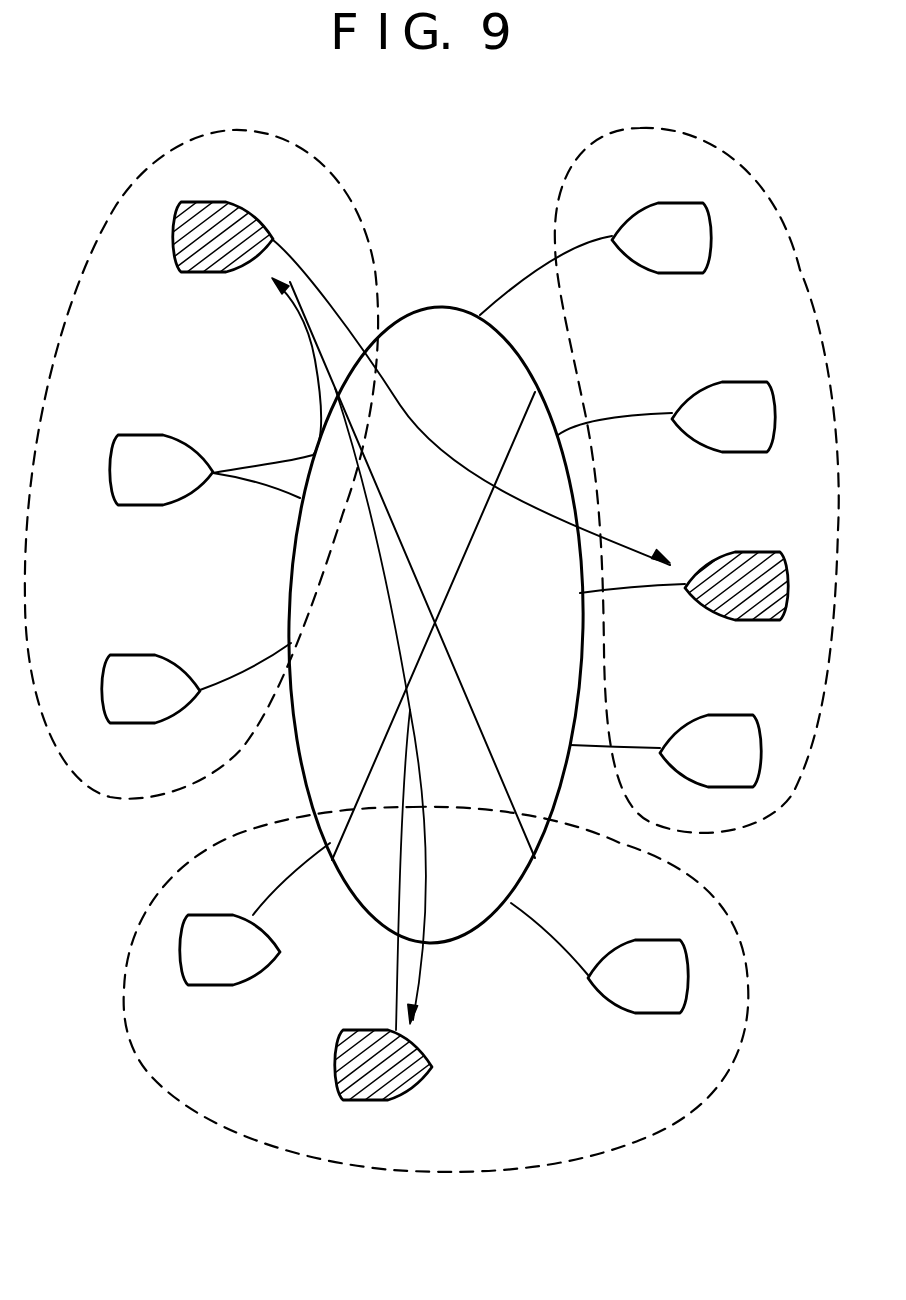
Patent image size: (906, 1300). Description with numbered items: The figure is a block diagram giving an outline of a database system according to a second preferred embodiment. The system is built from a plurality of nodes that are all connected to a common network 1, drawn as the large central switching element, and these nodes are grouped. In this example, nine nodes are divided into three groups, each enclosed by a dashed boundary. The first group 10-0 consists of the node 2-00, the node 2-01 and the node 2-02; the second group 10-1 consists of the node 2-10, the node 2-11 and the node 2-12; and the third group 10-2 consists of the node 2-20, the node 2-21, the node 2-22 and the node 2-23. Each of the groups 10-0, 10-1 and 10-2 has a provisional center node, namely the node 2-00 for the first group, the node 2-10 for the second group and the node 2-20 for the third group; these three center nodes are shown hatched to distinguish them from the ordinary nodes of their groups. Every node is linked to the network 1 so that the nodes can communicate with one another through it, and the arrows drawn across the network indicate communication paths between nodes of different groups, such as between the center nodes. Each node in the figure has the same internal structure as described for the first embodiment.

The network 1 is at (444, 307).
The group 10-0 is at (147, 157).
The group 10-1 is at (130, 922).
The group 10-2 is at (772, 819).
The node 2-00 is at (192, 273).
The node 2-01 is at (187, 418).
The node 2-02 is at (138, 653).
The node 2-10 is at (424, 1051).
The node 2-11 is at (217, 986).
The node 2-12 is at (637, 1014).
The node 2-20 is at (742, 621).
The node 2-21 is at (672, 274).
The node 2-22 is at (720, 453).
The node 2-23 is at (705, 724).